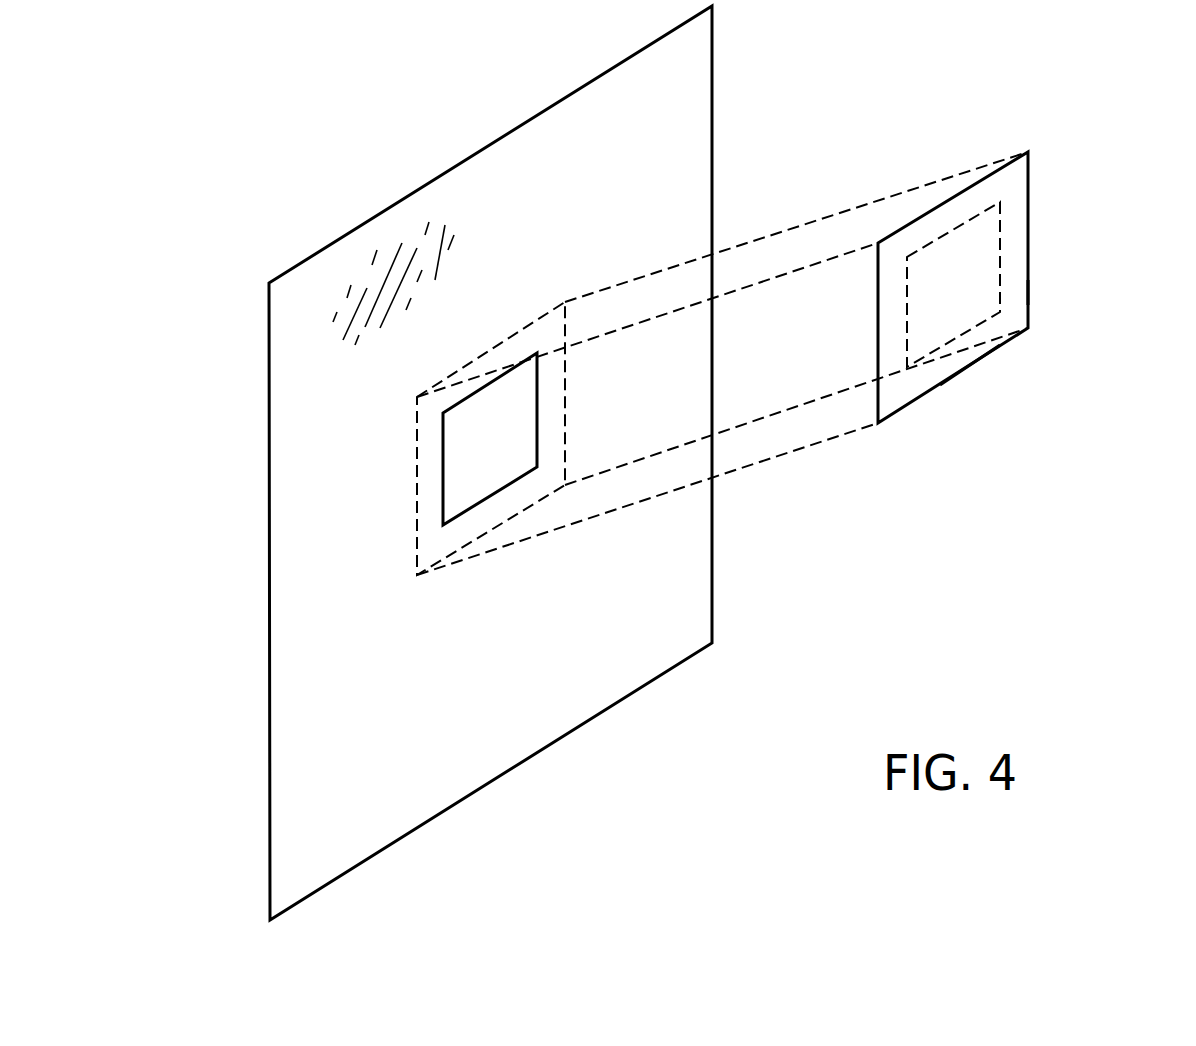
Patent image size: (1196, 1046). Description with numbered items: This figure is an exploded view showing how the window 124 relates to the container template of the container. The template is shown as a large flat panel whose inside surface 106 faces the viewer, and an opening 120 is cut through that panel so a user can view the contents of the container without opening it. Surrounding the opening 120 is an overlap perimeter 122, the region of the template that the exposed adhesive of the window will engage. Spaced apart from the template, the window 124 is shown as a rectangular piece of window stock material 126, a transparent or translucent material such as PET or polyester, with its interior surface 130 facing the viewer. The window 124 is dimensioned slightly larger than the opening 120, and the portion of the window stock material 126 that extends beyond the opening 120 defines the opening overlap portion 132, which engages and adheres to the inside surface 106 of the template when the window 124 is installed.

The inside surface 106 is at (424, 683).
The opening 120 is at (488, 507).
The overlap perimeter 122 is at (430, 477).
The window 124 is at (1034, 292).
The window stock material 126 is at (1027, 152).
The interior surface 130 is at (983, 276).
The opening overlap portion 132 is at (955, 367).